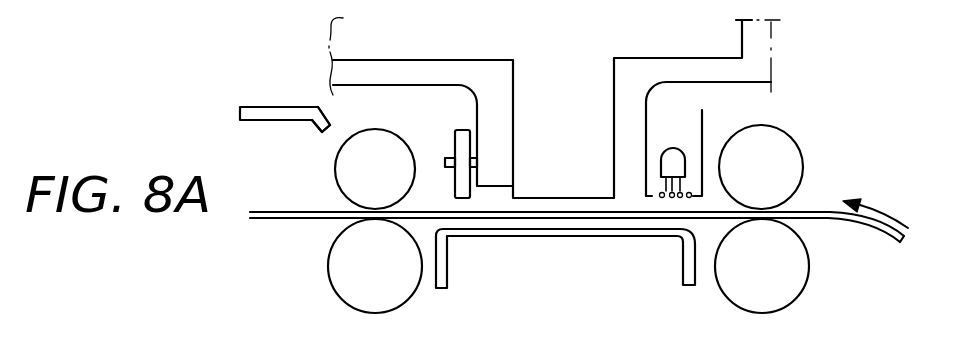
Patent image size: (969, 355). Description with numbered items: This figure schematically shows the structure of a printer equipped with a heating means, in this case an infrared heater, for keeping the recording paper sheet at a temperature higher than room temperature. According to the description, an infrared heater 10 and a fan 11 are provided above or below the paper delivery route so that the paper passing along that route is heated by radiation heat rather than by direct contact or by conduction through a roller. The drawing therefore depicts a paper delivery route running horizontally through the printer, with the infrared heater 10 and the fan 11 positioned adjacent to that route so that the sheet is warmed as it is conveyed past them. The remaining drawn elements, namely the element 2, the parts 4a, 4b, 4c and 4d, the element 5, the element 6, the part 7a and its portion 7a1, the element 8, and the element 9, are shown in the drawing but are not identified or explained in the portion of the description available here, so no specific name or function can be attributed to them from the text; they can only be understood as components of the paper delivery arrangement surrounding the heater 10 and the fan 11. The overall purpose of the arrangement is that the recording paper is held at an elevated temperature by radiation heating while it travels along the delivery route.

The sheet (document) 2 is at (556, 214).
The feed roller 4a is at (806, 282).
The feed roller 4b is at (800, 158).
The feed roller 4c is at (332, 281).
The feed roller 4d is at (338, 178).
The sheet guide 5 is at (505, 238).
The slot 6 is at (567, 72).
The plate 7a is at (266, 121).
The bent tip of plate 7a1 is at (266, 106).
The housing 8 is at (486, 70).
The detector 9 is at (456, 130).
The infrared heater 10 is at (660, 199).
The fan 11 is at (671, 148).